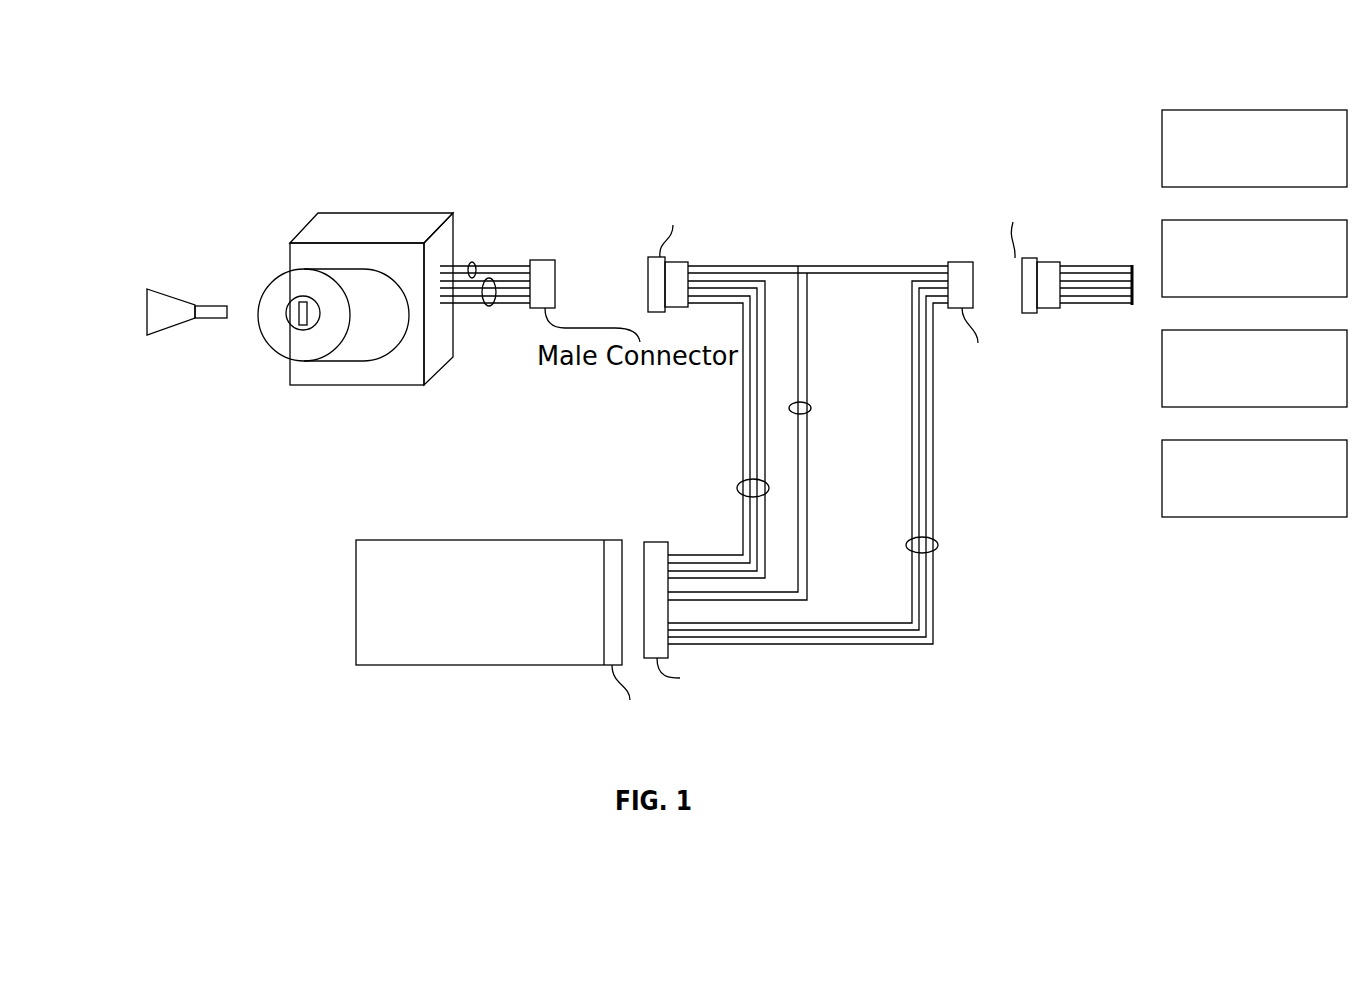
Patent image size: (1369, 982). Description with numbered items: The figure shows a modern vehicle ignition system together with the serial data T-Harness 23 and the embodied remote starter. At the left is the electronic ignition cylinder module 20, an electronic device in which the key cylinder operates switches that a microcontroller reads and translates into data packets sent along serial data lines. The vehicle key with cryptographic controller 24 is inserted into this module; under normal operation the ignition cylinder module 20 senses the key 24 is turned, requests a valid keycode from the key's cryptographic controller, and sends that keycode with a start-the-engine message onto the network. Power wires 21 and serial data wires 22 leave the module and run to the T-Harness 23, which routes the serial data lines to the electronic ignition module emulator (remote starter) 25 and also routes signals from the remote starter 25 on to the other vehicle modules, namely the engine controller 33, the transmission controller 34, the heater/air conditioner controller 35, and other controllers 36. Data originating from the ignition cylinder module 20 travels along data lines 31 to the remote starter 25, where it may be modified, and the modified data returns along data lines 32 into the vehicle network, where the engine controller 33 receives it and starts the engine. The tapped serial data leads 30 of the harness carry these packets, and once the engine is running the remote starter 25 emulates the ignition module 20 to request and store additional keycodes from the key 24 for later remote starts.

The electronic ignition cylinder module 20 is at (288, 270).
The power wires 21 is at (471, 262).
The serial data wires 22 is at (489, 306).
The serial data T-Harness 23 is at (800, 265).
The vehicle key with cryptographic controller 24 is at (173, 325).
The electronic ignition module emulator (remote starter) 25 is at (405, 540).
The serial data tap leads of T-harness 30 is at (811, 408).
The data lines 31 is at (737, 488).
The data lines 32 is at (938, 545).
The engine controller 33 is at (1212, 110).
The transmission controller 34 is at (1212, 220).
The heater/air conditioner controller 35 is at (1212, 330).
The other controllers 36 is at (1212, 440).